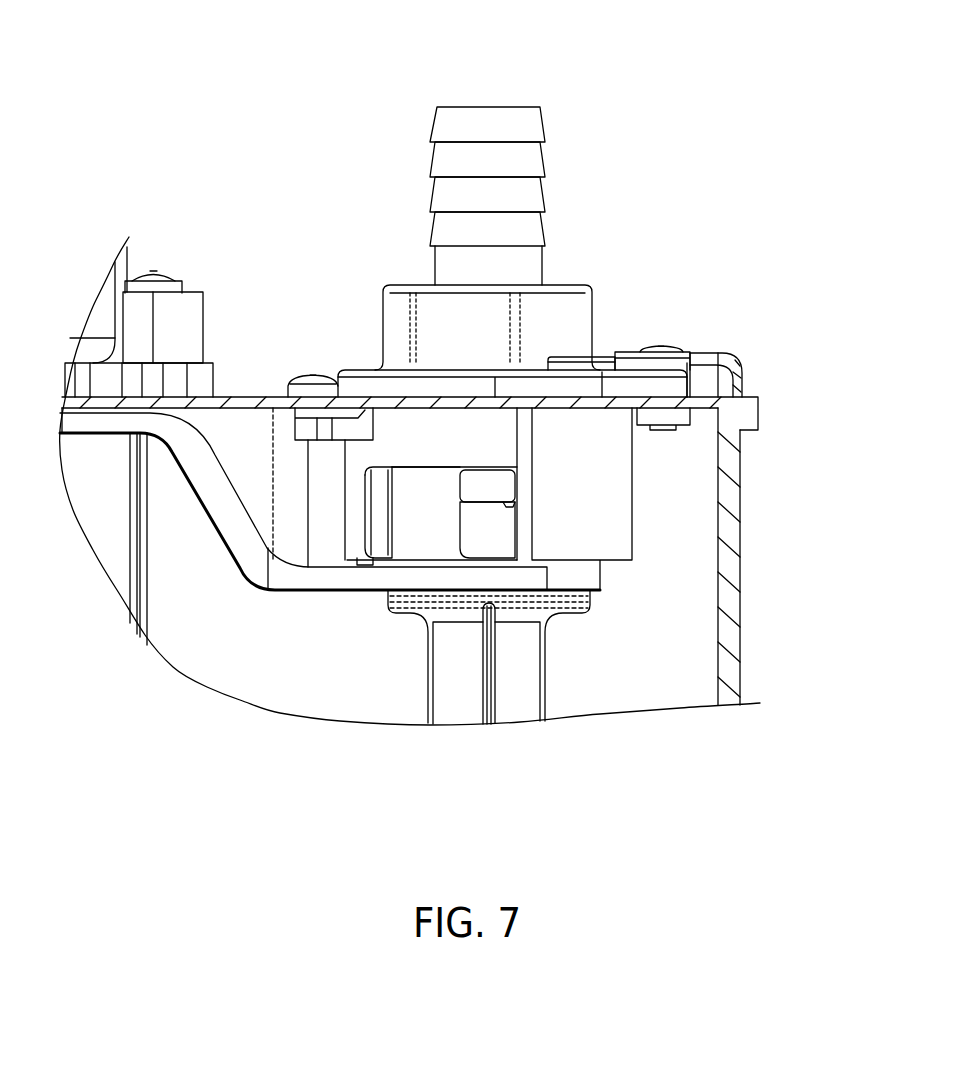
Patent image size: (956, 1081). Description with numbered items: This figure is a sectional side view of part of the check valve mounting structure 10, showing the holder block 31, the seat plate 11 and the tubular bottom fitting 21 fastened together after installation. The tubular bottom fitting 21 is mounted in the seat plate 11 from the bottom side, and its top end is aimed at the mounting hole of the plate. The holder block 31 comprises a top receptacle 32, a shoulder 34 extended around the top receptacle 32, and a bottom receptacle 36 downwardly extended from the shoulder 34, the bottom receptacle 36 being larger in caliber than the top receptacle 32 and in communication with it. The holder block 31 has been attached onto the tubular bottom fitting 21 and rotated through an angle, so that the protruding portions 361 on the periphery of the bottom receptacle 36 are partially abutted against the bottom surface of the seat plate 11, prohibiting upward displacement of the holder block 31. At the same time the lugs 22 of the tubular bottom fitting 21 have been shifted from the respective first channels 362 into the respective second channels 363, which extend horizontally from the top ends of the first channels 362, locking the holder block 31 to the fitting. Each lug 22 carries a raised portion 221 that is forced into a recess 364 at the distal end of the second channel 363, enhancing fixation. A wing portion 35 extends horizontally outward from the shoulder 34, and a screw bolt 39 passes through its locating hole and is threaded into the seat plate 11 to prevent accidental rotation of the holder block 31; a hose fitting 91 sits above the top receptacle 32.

The check valve mounting structure 10 is at (608, 248).
The seat plate 11 is at (244, 397).
The tubular bottom fitting 21 is at (571, 622).
The lug 22 is at (482, 490).
The raised portion 221 is at (512, 508).
The holder block 31 is at (601, 296).
The top receptacle 32 is at (567, 285).
The shoulder 34 is at (353, 370).
The wing portion 35 is at (722, 353).
The bottom receptacle 36 is at (634, 510).
The protruding portion 361 is at (309, 412).
The first channel 362 is at (418, 528).
The second channel 363 is at (478, 466).
The recess 364 is at (503, 504).
The screw bolt 39 is at (671, 348).
The hose fitting 91 is at (515, 92).